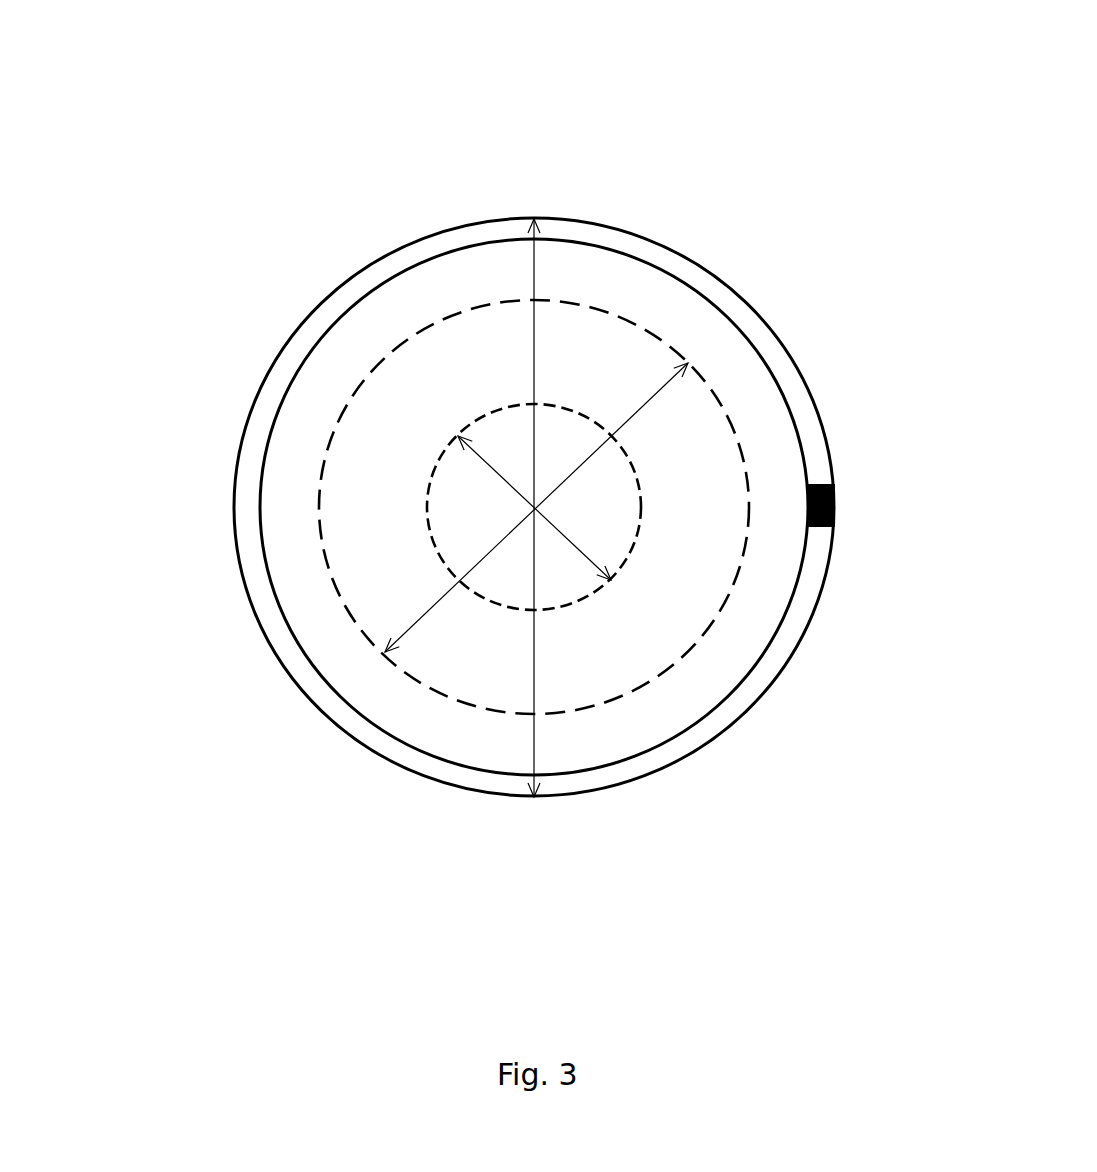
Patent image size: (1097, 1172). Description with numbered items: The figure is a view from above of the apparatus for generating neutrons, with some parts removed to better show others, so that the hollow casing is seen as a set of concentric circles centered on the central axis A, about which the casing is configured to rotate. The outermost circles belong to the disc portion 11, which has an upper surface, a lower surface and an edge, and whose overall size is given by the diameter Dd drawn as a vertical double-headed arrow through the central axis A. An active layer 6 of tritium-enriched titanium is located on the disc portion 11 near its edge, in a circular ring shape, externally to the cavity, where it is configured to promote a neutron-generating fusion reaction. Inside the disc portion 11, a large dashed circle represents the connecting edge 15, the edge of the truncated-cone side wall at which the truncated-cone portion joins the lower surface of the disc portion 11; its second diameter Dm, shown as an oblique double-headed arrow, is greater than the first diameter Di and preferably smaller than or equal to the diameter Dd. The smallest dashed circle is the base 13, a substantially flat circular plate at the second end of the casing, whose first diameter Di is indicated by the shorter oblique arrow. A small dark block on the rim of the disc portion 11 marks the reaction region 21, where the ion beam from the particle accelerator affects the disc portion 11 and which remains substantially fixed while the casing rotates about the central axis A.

The active layer 6 is at (382, 273).
The disc portion 11 is at (252, 405).
The base 13 is at (603, 485).
The connecting edge 15 is at (443, 693).
The reaction region 21 is at (812, 528).
The diameter of the disc portion Dd is at (535, 273).
The second diameter Dm is at (450, 588).
The first diameter Di is at (567, 543).
The central axis A is at (535, 500).